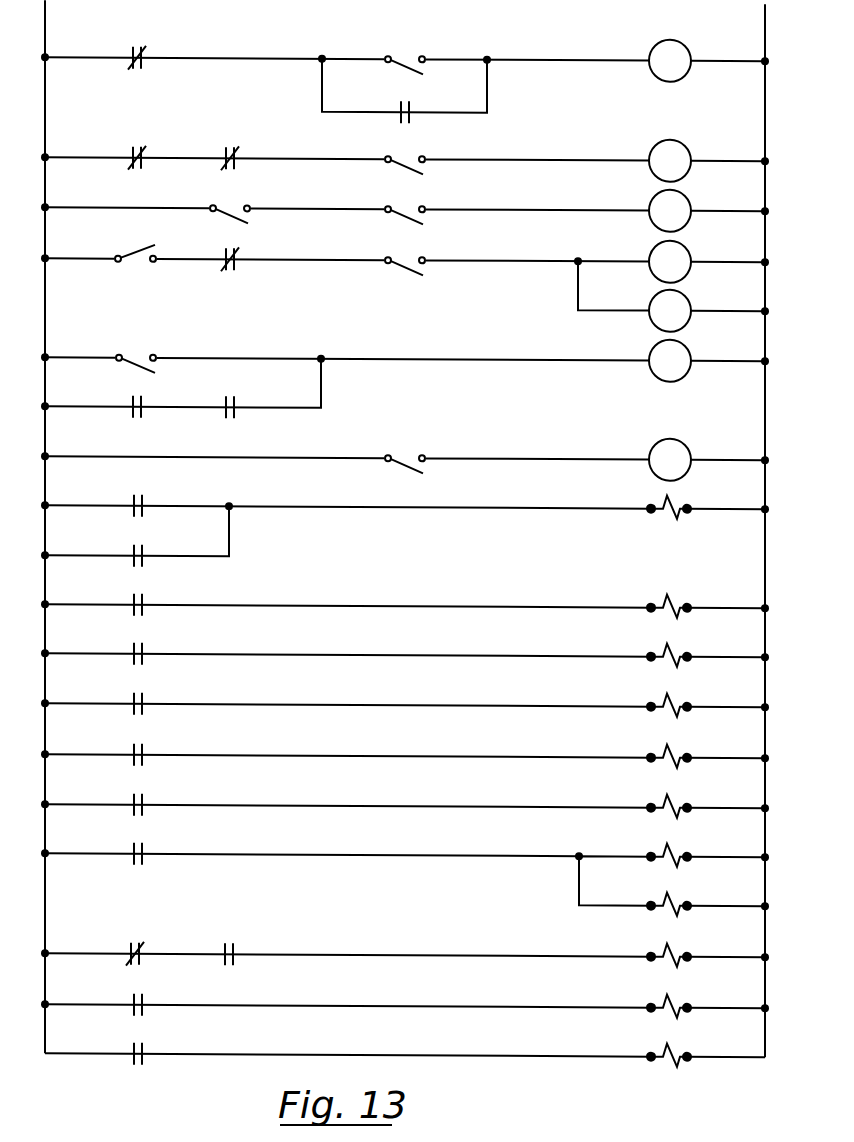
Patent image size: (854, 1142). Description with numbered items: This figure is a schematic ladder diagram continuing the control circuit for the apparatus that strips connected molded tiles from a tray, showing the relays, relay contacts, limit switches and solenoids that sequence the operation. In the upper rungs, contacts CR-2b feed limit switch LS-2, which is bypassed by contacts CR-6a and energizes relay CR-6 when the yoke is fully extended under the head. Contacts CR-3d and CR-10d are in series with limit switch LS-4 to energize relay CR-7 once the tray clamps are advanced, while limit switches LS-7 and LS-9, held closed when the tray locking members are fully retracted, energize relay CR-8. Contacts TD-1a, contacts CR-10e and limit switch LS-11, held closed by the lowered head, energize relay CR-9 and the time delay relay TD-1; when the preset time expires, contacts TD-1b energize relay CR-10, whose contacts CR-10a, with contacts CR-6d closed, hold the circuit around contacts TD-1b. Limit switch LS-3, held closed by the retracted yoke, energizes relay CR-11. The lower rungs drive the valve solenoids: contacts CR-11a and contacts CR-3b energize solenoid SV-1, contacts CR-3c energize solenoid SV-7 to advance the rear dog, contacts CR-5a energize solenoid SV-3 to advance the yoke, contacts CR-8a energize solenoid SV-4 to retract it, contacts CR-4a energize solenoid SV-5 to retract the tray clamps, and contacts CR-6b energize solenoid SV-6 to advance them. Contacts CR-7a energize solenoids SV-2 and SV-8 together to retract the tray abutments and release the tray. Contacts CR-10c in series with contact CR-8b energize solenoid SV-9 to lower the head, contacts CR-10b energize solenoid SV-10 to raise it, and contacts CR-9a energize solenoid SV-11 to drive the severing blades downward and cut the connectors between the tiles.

The relay contacts CR-2b is at (148, 49).
The limit switch LS-2 is at (406, 54).
The relay contacts CR-6a is at (407, 101).
The relay CR-6 is at (670, 61).
The relay contacts CR-3d is at (142, 149).
The relay contacts CR-10d is at (240, 149).
The limit switch LS-4 is at (406, 154).
The relay CR-7 is at (670, 161).
The limit switch LS-7 is at (233, 203).
The limit switch LS-9 is at (406, 204).
The relay CR-8 is at (670, 211).
The time delay relay contacts TD-1a is at (117, 245).
The relay contacts CR-10e is at (236, 250).
The limit switch LS-11 is at (408, 255).
The relay CR-9 is at (670, 262).
The time delay relay TD-1 is at (670, 311).
The time delay contacts TD-1b is at (138, 351).
The relay contacts CR-6d is at (140, 397).
The relay contacts CR-10a is at (240, 397).
The relay CR-10 is at (670, 361).
The limit switch LS-3 is at (406, 453).
The relay CR-11 is at (670, 460).
The relay contacts CR-11a is at (145, 496).
The solenoid SV-1 is at (688, 503).
The relay contacts CR-3b is at (145, 546).
The relay contacts CR-3c is at (142, 595).
The solenoid SV-7 is at (689, 602).
The relay contacts CR-5a is at (142, 644).
The solenoid SV-3 is at (688, 651).
The relay contacts CR-8a is at (140, 694).
The solenoid SV-4 is at (688, 701).
The relay contacts CR-4a is at (142, 745).
The solenoid SV-5 is at (688, 752).
The relay contacts CR-6b is at (142, 795).
The solenoid SV-6 is at (688, 802).
The relay contacts CR-7a is at (140, 844).
The solenoid SV-2 is at (688, 851).
The solenoid SV-8 is at (688, 899).
The relay contacts CR-10c is at (138, 945).
The relay contact CR-8b is at (240, 944).
The solenoid SV-9 is at (688, 950).
The relay contacts CR-10b is at (140, 995).
The solenoid SV-10 is at (692, 1001).
The relay contacts CR-9a is at (142, 1044).
The solenoid SV-11 is at (692, 1050).